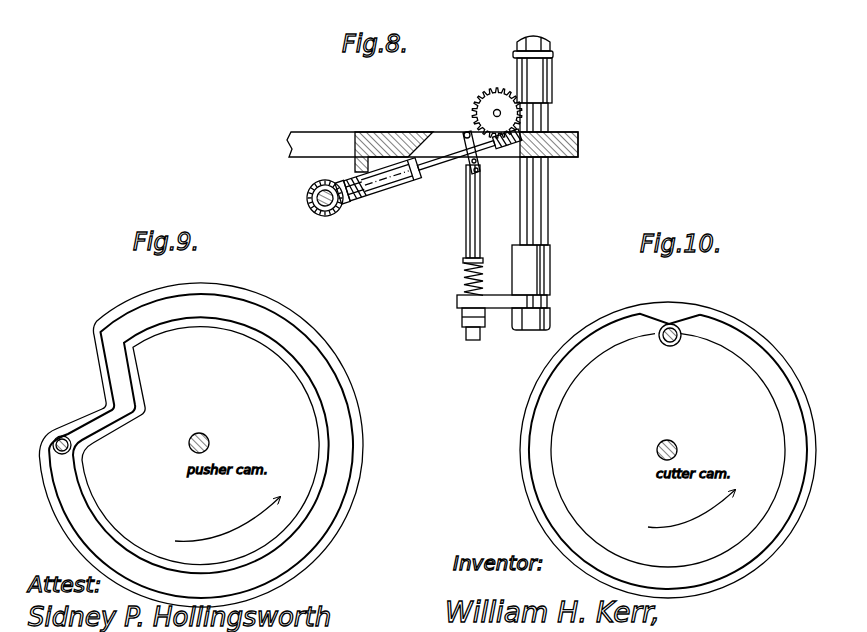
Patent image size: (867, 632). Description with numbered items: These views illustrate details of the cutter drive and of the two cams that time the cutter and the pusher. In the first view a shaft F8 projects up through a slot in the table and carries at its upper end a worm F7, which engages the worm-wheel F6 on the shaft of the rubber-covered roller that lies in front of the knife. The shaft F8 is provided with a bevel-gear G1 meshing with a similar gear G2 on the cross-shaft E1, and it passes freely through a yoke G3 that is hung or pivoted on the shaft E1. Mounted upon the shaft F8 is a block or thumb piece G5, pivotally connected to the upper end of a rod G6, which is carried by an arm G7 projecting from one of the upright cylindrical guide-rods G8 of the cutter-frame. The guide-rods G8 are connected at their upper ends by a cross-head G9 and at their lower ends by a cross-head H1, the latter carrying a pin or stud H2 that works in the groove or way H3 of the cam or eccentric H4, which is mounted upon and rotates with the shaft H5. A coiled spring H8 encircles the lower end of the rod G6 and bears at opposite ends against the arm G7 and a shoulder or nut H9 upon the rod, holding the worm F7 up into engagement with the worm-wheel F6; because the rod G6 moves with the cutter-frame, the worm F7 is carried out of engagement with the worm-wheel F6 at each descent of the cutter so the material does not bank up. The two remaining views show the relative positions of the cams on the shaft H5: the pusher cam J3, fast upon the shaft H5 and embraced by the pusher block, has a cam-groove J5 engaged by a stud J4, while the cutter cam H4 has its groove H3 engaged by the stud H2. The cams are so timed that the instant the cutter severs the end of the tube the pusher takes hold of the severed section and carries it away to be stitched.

In FIG. 8, the upright cylindrical guide-rod G8 is at (536, 117).
In FIG. 8, the cross-head G9 is at (517, 70).
In FIG. 8, the cross-head H1 is at (530, 287).
In FIG. 8, the arm G7 is at (457, 302).
In FIG. 8, the rod G6 is at (466, 213).
In FIG. 8, the shoulder or nut H9 is at (461, 259).
In FIG. 8, the coiled spring H8 is at (464, 275).
In FIG. 8, the worm-wheel F6 is at (484, 99).
In FIG. 8, the cross-shaft E1 is at (309, 201).
In FIG. 8, the bevel-gear G2 is at (325, 210).
In FIG. 8, the bevel-gear G1 is at (343, 204).
In FIG. 8, the yoke G3 is at (383, 186).
In FIG. 8, the shaft F8 is at (456, 166).
In FIG. 8, the worm F7 is at (507, 147).
In FIG. 8, the block or thumb piece G5 is at (466, 131).
In FIG. 9, the cam J3 is at (201, 445).
In FIG. 9, the cam-groove J5 is at (201, 445).
In FIG. 9, the stud J4 is at (58, 437).
In FIG. 9, the shaft H5 is at (203, 433).
In FIG. 10, the shaft H5 is at (672, 441).
In FIG. 10, the cam or eccentric H4 is at (668, 450).
In FIG. 10, the pin or stud H2 is at (670, 347).
In FIG. 10, the groove or way H3 is at (691, 335).